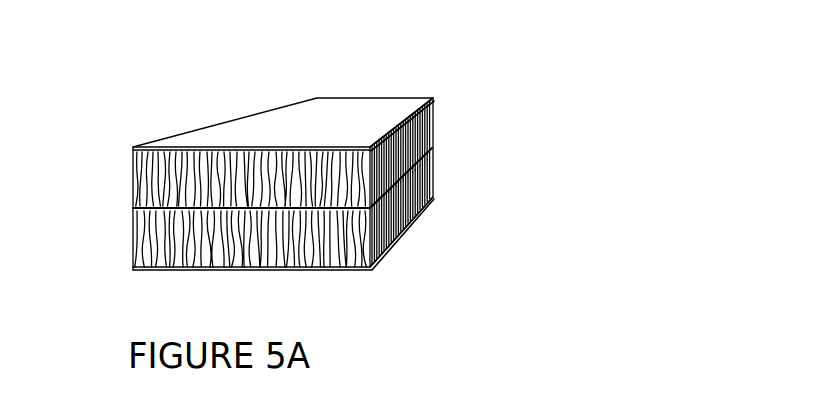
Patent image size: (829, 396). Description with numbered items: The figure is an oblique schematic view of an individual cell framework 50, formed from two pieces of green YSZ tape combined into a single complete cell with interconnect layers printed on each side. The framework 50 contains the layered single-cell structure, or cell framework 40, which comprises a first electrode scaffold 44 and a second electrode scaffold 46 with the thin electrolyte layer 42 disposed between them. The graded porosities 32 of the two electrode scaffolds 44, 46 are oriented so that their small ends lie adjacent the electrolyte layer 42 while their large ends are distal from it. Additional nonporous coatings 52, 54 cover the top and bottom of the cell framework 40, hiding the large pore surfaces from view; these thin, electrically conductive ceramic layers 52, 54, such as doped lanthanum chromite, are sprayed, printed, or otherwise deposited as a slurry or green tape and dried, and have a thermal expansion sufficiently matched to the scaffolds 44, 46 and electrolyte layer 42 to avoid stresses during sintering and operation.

The individual cell framework 50 is at (371, 77).
The nonporous coating 52 is at (290, 130).
The nonporous coating 54 is at (278, 270).
The cell framework 40 is at (130, 150).
The electrolyte layer 42 is at (388, 190).
The first electrode scaffold 44 is at (425, 138).
The second electrode scaffold 46 is at (430, 200).
The graded porosities 32 is at (153, 272).